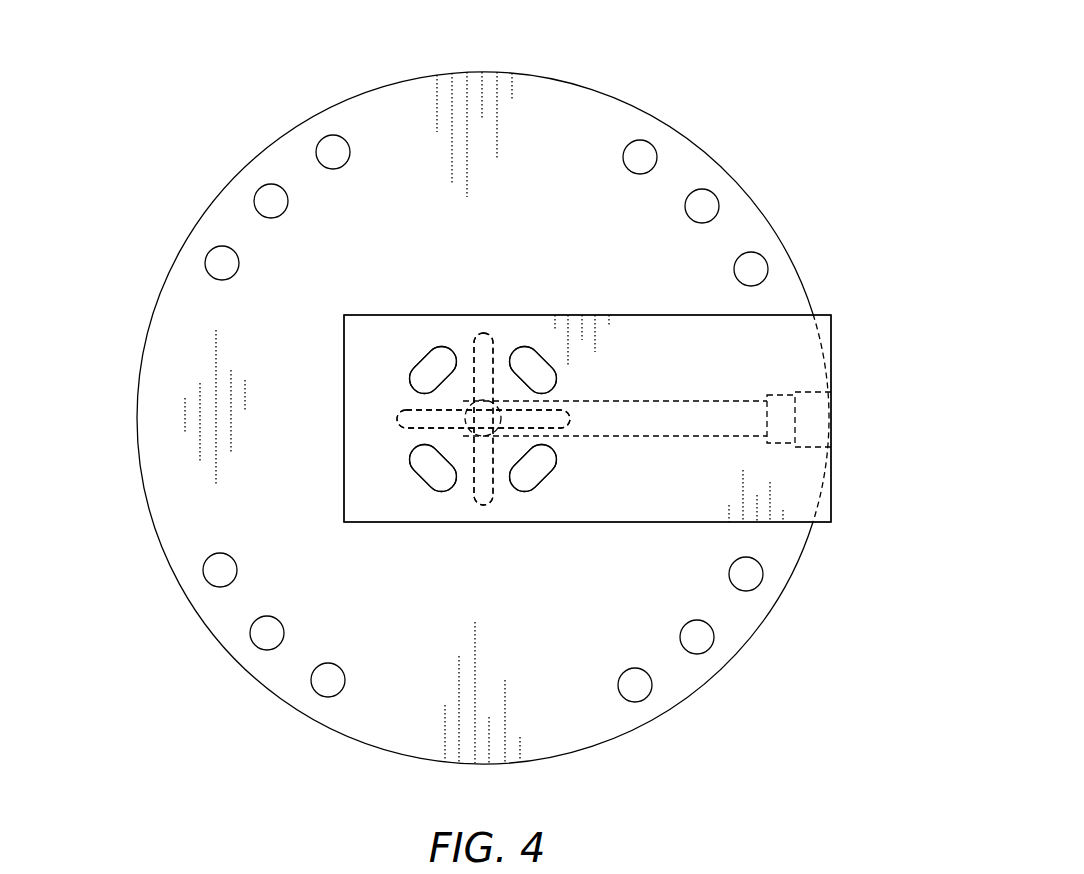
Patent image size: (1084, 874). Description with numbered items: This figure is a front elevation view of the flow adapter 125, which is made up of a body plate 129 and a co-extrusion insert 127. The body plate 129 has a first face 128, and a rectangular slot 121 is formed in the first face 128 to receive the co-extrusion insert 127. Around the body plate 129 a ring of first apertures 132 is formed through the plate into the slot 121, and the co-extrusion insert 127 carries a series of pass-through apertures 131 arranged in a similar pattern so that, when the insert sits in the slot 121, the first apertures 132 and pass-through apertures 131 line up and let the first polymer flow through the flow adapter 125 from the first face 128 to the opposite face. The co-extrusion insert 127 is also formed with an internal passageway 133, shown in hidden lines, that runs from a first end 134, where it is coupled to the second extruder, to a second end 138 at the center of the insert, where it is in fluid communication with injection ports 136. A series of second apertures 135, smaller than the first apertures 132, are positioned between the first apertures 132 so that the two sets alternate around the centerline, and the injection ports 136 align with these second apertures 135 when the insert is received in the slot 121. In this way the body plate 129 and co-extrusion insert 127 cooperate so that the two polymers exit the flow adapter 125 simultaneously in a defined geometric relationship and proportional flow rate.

The flow adapter 125 is at (154, 142).
The body plate 129 is at (455, 63).
The first face 128 is at (587, 125).
The co-extrusion insert 127 is at (676, 363).
The slot 121 is at (767, 522).
The pass-through apertures 131 is at (433, 368).
The first apertures 132 is at (482, 418).
The second apertures 135 is at (484, 412).
The injection ports 136 is at (483, 419).
The second end 138 is at (487, 412).
The internal passageway 133 is at (720, 418).
The first end 134 is at (815, 428).